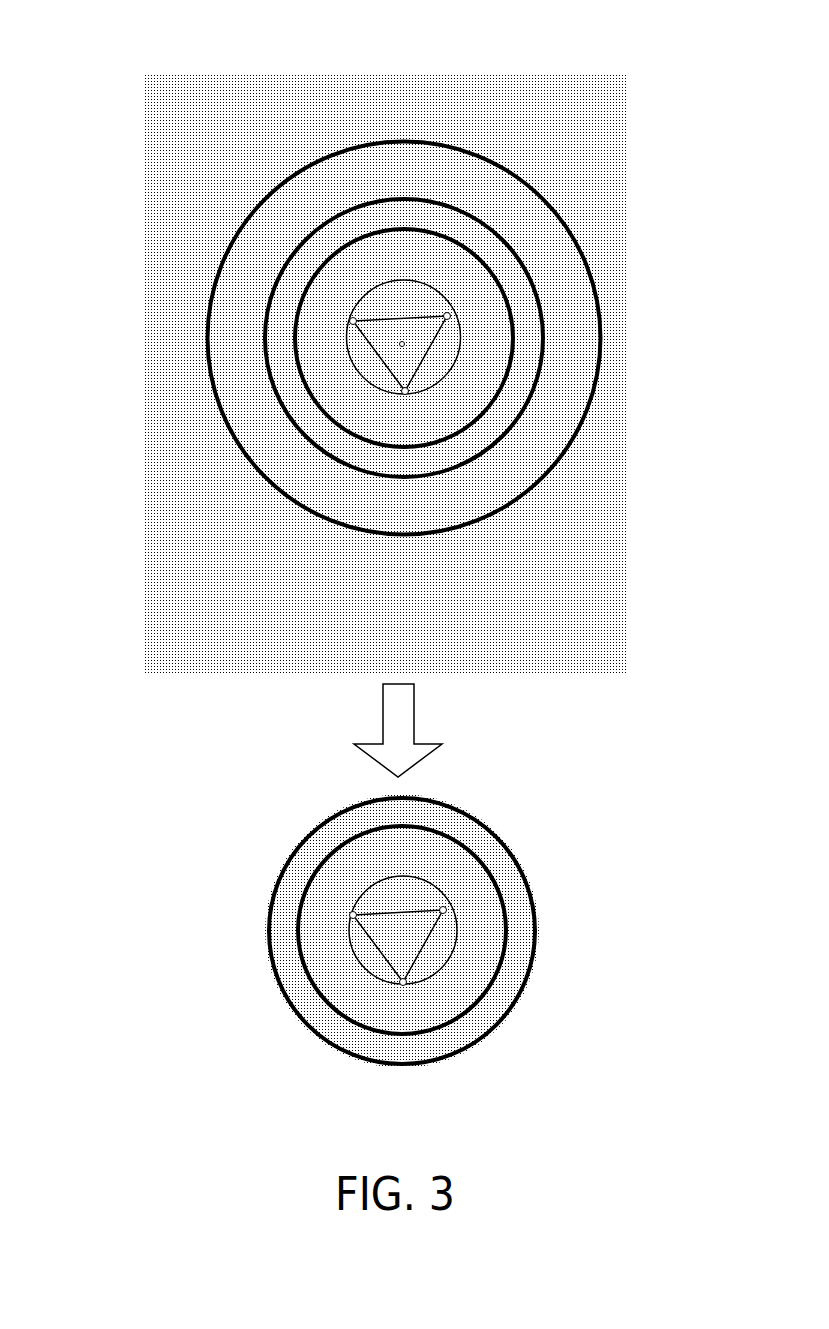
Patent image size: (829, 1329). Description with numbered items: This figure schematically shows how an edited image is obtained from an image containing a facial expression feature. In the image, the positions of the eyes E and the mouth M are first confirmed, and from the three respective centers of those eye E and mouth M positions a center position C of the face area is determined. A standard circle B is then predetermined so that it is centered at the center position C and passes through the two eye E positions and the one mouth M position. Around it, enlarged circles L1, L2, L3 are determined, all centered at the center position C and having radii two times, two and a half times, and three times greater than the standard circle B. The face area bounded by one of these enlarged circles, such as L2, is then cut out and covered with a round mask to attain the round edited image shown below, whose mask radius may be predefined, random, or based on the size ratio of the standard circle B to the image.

The eyes E is at (352, 320).
The standard circle B is at (340, 346).
The center position C is at (352, 373).
The mouth M is at (310, 445).
The enlarged circle L1 is at (510, 288).
The enlarged circle L2 is at (540, 357).
The enlarged circle L3 is at (577, 438).